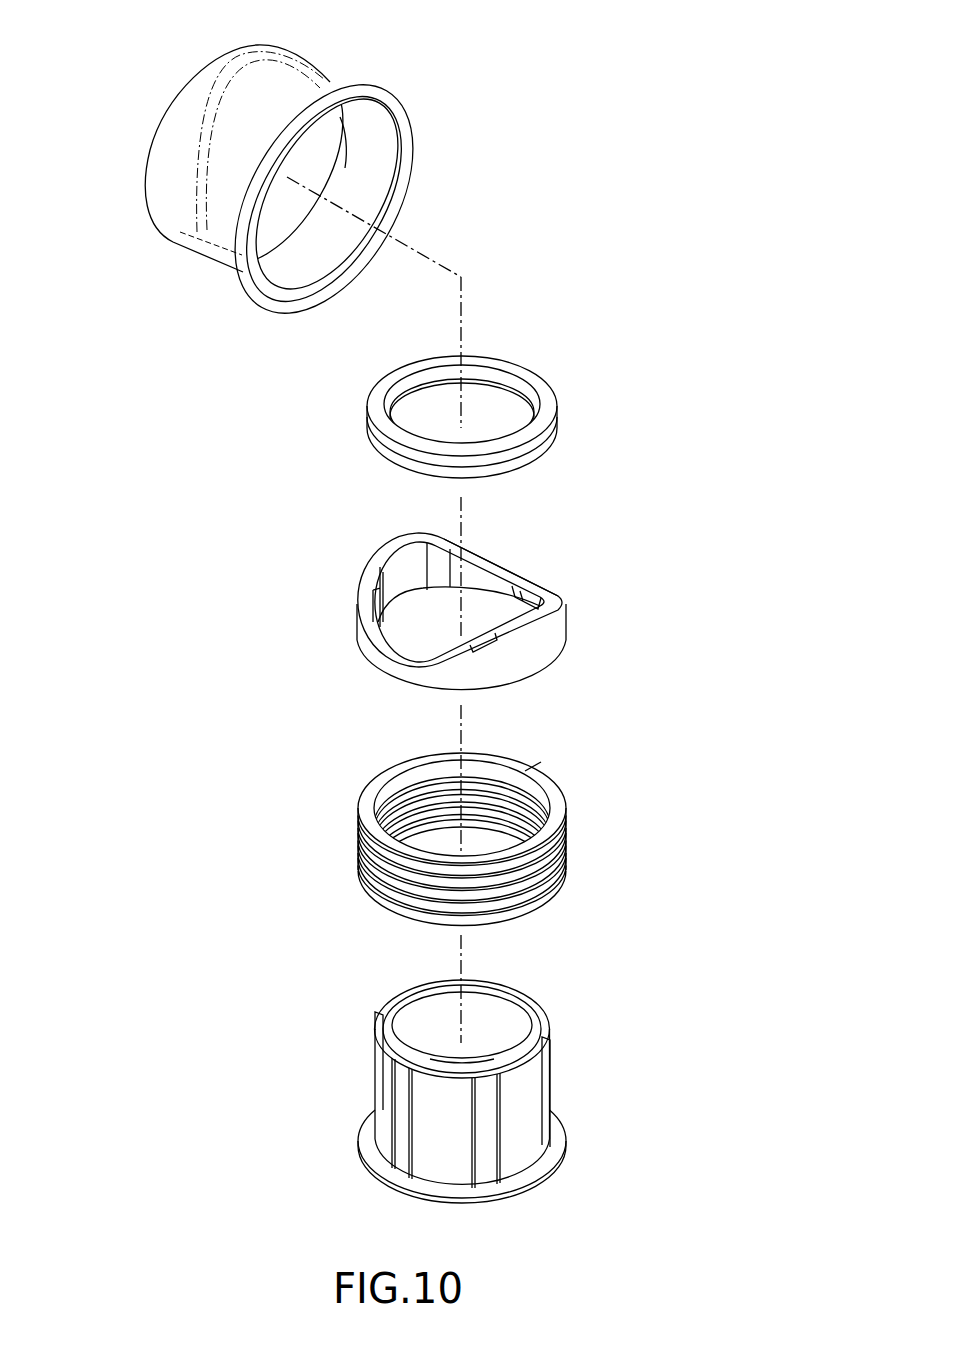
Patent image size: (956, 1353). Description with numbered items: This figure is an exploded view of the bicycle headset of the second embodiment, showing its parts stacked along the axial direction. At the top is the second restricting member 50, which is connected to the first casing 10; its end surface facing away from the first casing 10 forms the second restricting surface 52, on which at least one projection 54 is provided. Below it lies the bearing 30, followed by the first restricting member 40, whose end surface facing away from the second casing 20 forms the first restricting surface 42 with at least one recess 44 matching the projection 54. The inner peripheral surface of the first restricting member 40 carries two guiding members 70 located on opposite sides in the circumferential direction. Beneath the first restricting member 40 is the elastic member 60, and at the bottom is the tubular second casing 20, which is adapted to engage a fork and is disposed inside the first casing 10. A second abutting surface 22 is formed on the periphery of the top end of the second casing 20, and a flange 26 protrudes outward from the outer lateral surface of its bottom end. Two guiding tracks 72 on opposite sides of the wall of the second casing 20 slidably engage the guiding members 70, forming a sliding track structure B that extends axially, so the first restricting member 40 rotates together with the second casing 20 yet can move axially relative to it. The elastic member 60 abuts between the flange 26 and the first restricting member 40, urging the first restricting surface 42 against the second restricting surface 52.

The first casing 10 is at (160, 248).
The second casing 20 is at (572, 1168).
The second abutting surface 22 is at (548, 1045).
The flange 26 is at (557, 1140).
The bearing 30 is at (535, 392).
The first restricting member 40 is at (585, 632).
The first restricting surface 42 is at (497, 552).
The recess 44 is at (525, 583).
The second restricting member 50 is at (318, 142).
The second restricting surface 52 is at (345, 172).
The projection 54 is at (346, 133).
The elastic member 60 is at (560, 815).
The guiding member 70 is at (377, 580).
The guiding track 72 is at (380, 1022).
The sliding track structure B is at (385, 1163).